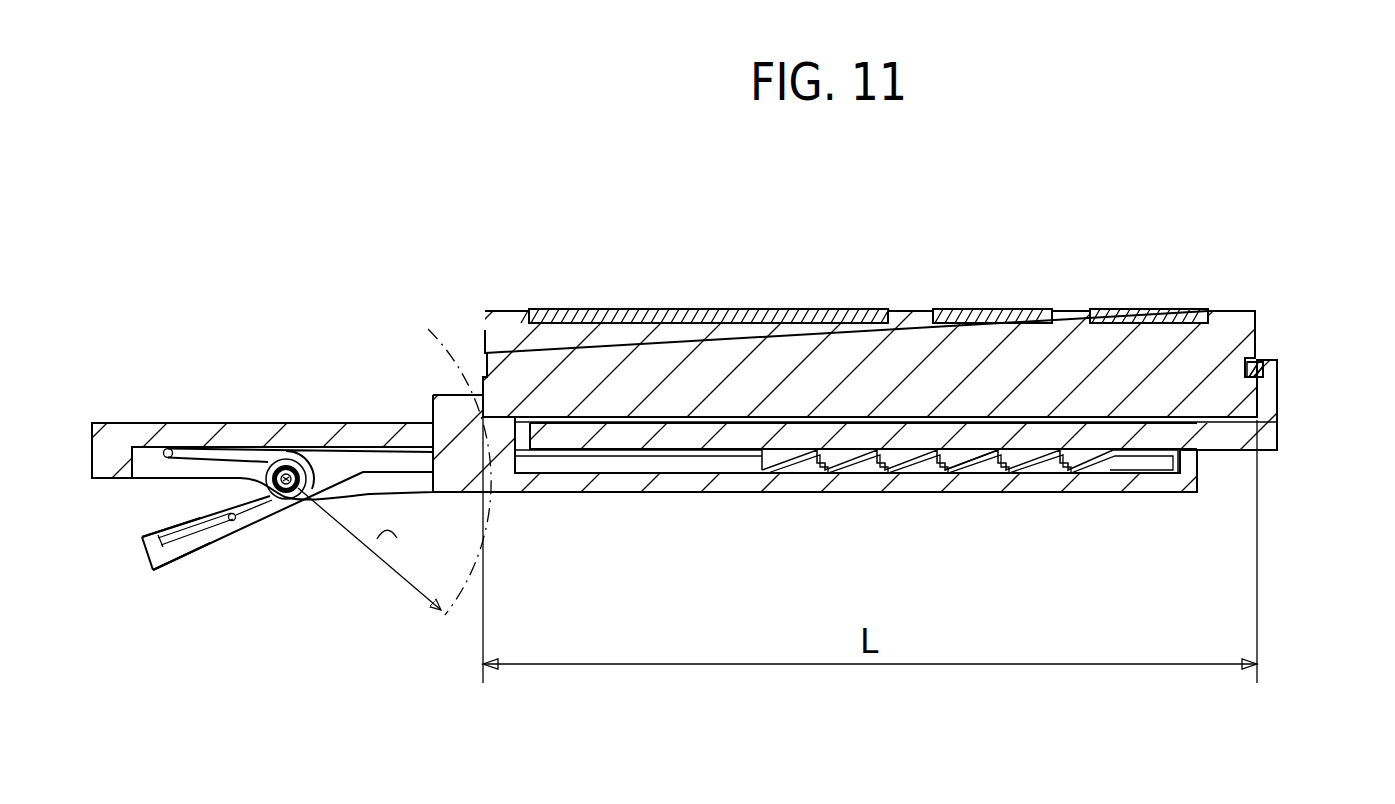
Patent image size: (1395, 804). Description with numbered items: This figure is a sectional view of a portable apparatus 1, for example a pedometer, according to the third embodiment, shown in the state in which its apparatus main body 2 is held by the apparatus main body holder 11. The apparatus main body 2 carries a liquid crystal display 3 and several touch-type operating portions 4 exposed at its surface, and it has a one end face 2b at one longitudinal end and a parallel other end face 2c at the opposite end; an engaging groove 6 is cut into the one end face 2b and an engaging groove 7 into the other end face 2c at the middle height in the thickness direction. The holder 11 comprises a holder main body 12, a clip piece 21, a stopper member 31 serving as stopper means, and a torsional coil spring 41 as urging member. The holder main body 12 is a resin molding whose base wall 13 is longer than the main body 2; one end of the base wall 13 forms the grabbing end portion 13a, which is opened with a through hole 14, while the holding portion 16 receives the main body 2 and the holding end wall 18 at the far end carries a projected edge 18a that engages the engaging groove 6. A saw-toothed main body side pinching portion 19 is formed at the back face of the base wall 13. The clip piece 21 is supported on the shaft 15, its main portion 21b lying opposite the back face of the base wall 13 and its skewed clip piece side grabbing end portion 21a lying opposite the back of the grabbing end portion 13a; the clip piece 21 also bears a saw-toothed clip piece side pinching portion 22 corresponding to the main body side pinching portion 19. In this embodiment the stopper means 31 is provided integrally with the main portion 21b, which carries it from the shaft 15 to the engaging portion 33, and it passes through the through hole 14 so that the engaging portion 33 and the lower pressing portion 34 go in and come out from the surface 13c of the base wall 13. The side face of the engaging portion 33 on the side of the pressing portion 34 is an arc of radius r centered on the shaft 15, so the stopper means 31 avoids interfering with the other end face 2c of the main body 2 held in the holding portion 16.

The portable apparatus 1 is at (1214, 472).
The apparatus main body 2 is at (912, 305).
The one end face 2b is at (1257, 328).
The other end face 2c is at (485, 352).
The display 3 is at (767, 320).
The operating portions 4 is at (1020, 312).
The engaging groove 6 is at (1245, 362).
The engaging groove 7 is at (462, 322).
The apparatus main body holder 11 is at (579, 518).
The holder main body 12 is at (922, 471).
The base wall 13 is at (648, 438).
The holder main body grabbing end portion 13a is at (168, 437).
The surface of the base wall 13c is at (813, 427).
The through hole 14 is at (523, 437).
The shaft 15 is at (285, 492).
The holding portion 16 is at (1278, 399).
The holding end wall 18 is at (1268, 417).
The projected edge 18a is at (1265, 365).
The main body side pinching portion 19 is at (887, 463).
The clip piece 21 is at (269, 458).
The clip piece side grabbing end portion 21a is at (192, 550).
The main portion 21b is at (733, 486).
The clip piece side pinching portion 22 is at (978, 473).
The stopper member 31 is at (460, 465).
The engaging portion 33 is at (448, 405).
The pressing portion 34 is at (500, 422).
The torsional coil spring 41 is at (233, 410).